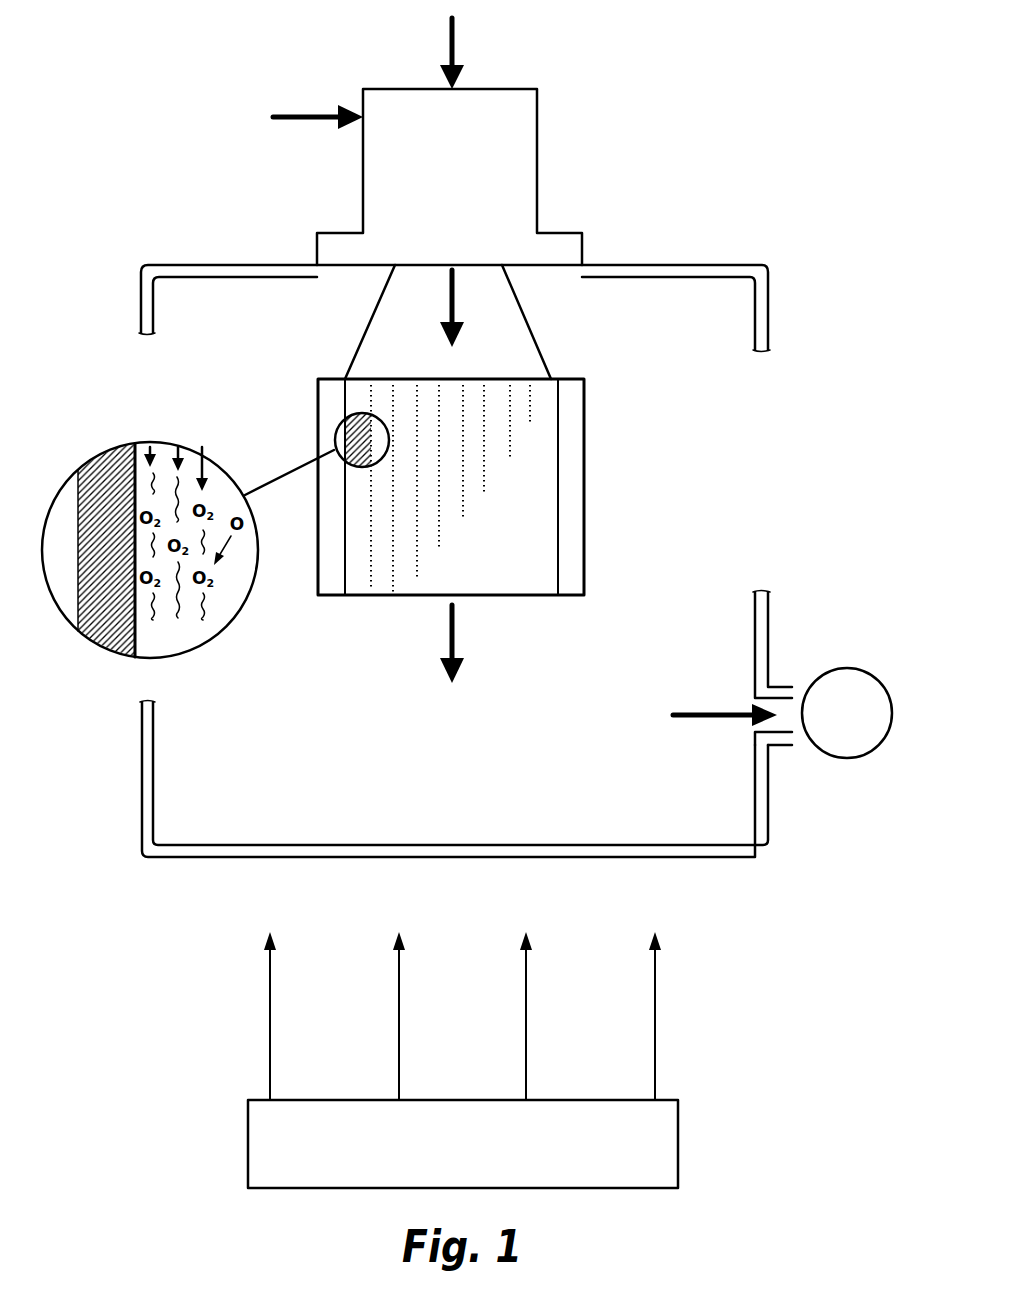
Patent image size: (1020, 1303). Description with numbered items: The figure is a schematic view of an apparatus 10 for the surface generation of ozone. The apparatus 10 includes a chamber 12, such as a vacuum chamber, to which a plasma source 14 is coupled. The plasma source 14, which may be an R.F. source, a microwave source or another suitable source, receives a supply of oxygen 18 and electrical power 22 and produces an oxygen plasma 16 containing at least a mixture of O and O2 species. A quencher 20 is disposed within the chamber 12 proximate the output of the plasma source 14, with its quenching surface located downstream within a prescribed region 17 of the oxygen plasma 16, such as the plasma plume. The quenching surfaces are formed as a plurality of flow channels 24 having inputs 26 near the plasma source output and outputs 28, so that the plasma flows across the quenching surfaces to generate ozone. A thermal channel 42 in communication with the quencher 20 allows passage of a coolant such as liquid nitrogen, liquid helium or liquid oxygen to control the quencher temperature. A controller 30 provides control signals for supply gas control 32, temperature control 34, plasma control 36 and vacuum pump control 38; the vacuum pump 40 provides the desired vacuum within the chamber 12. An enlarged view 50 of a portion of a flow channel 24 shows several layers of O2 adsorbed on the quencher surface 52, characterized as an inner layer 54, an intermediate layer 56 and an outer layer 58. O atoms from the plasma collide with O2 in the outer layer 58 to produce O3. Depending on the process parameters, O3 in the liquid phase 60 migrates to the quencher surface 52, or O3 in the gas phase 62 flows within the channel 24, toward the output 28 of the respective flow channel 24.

The apparatus 10 is at (145, 46).
The chamber 12 is at (200, 265).
The plasma source 14 is at (537, 150).
The oxygen plasma 16 is at (400, 285).
The prescribed region 17 is at (522, 312).
The supply of oxygen 18 is at (452, 45).
The quencher 20 is at (585, 525).
The electrical power 22 is at (300, 118).
The flow channels 24 is at (530, 430).
The inputs 26 is at (447, 315).
The outputs 28 is at (457, 620).
The controller 30 is at (266, 1138).
The supply gas control 32 is at (270, 1025).
The temperature control 34 is at (399, 1025).
The plasma control 36 is at (526, 1025).
The vacuum pump control 38 is at (655, 1025).
The vacuum pump 40 is at (840, 668).
The thermal channel 42 is at (575, 392).
The enlarged view 50 is at (70, 507).
The quencher surface 52 is at (146, 650).
The inner layer 54 is at (150, 447).
The intermediate layer 56 is at (178, 447).
The outer layer 58 is at (202, 447).
The liquid-phase ozone 60 is at (156, 646).
The gas-phase ozone 62 is at (238, 603).